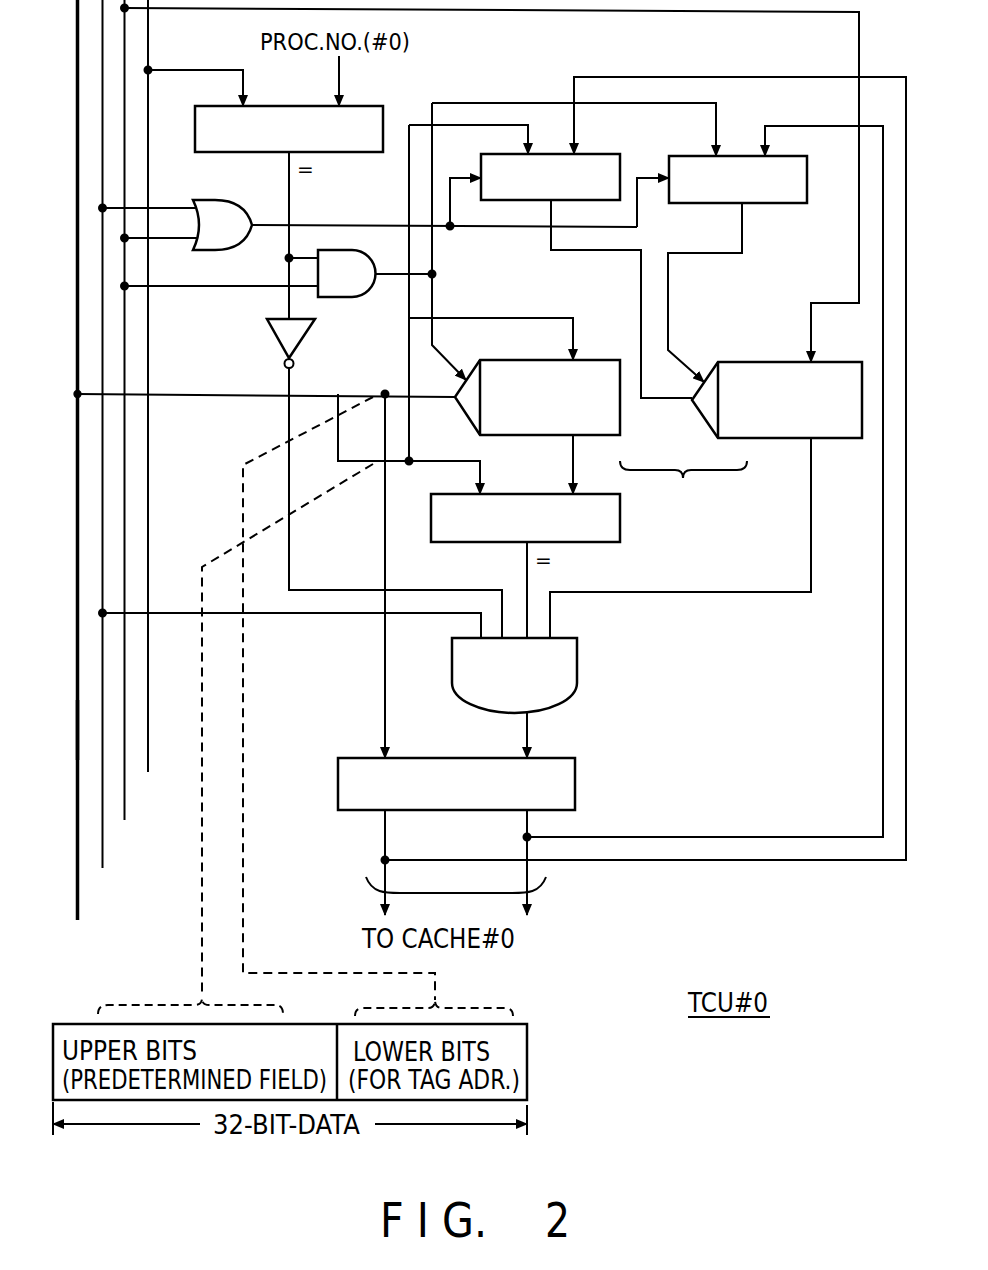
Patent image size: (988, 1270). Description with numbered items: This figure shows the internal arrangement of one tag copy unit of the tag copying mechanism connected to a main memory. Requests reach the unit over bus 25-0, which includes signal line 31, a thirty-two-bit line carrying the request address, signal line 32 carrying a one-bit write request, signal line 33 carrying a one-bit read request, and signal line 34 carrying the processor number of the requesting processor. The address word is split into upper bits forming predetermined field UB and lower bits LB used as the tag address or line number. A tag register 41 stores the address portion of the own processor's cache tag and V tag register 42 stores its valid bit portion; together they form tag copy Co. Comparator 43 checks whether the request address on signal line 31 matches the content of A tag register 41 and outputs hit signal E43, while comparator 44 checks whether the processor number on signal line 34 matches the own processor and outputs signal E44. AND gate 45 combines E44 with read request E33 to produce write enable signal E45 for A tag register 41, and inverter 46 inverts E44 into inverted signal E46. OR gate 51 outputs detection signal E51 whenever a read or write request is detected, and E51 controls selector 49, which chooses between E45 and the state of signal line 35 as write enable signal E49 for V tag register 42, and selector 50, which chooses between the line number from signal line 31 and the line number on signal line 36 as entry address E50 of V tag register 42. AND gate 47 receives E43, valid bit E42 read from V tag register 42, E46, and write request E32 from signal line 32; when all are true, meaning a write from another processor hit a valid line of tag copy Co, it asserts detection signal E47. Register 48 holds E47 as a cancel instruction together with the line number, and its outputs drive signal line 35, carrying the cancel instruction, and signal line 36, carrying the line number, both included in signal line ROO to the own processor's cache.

The signal line 31 is at (137, 477).
The signal line 32 is at (200, 386).
The signal line 33 is at (195, 432).
The signal line 34 is at (210, 407).
The signal line 35 is at (527, 837).
The signal line 36 is at (385, 860).
The bus 25-0 is at (78, 728).
The A tag register 41 is at (535, 360).
The V tag register 42 is at (760, 362).
The comparator 43 is at (620, 525).
The comparator 44 is at (378, 86).
The AND gate 45 is at (350, 298).
The inverter 46 is at (277, 350).
The AND gate 47 is at (577, 660).
The register 48 is at (575, 785).
The selector 49 is at (743, 156).
The selector 50 is at (550, 154).
The OR gate 51 is at (212, 200).
The detection signal E51 is at (349, 225).
The output signal E44 is at (289, 259).
The write enable signal E45 is at (432, 274).
The read request E33 is at (197, 288).
The inverted signal E46 is at (334, 590).
The entry address E50 is at (613, 251).
The write enable signal E49 is at (668, 275).
The output signal E43 is at (527, 574).
The valid bit E42 is at (770, 592).
The write request E32 is at (320, 614).
The detection signal E47 is at (527, 735).
The signal line R00 ROO is at (546, 880).
The tag copy C0 Co is at (683, 485).
The predetermined field UB is at (300, 1024).
The lower bits LB is at (527, 1024).